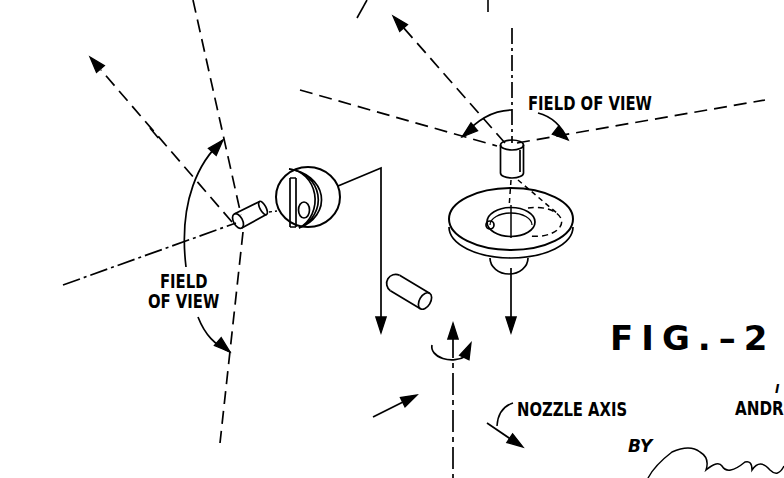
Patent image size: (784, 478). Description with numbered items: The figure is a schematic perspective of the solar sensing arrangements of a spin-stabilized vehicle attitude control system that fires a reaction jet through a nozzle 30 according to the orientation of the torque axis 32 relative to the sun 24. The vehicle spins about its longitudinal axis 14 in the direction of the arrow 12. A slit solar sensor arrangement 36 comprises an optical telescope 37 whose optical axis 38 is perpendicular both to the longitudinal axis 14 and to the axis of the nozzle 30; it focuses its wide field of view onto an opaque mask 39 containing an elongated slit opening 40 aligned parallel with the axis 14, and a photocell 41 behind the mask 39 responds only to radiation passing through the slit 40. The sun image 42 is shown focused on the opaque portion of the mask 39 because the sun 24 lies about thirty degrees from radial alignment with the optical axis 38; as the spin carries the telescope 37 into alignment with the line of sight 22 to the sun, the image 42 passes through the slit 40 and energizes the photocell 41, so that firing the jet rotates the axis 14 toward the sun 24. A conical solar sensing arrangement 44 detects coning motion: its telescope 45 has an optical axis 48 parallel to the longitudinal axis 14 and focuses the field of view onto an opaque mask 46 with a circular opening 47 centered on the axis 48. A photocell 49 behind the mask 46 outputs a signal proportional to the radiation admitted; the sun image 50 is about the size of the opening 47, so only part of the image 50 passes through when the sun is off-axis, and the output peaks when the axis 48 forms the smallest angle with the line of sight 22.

The arrow 12 is at (466, 354).
The longitudinal axis 14 is at (455, 400).
The line of sight 22 is at (151, 123).
The sun 24 is at (147, 125).
The nozzle 30 is at (418, 282).
The torque axis 32 is at (394, 407).
The slit solar sensor arrangement 36 is at (292, 195).
The optical telescope 37 is at (246, 230).
The optical axis 38 is at (67, 283).
The opaque mask 39 is at (300, 230).
The elongated slit opening 40 is at (287, 170).
The photocell 41 is at (318, 166).
The sun image 42 is at (313, 228).
The conical solar sensing arrangement 44 is at (515, 236).
The telescope 45 is at (500, 158).
The opaque mask 46 is at (570, 213).
The circular opening 47 is at (487, 223).
The optical axis 48 is at (513, 40).
The photocell 49 is at (518, 268).
The image 50 is at (552, 232).